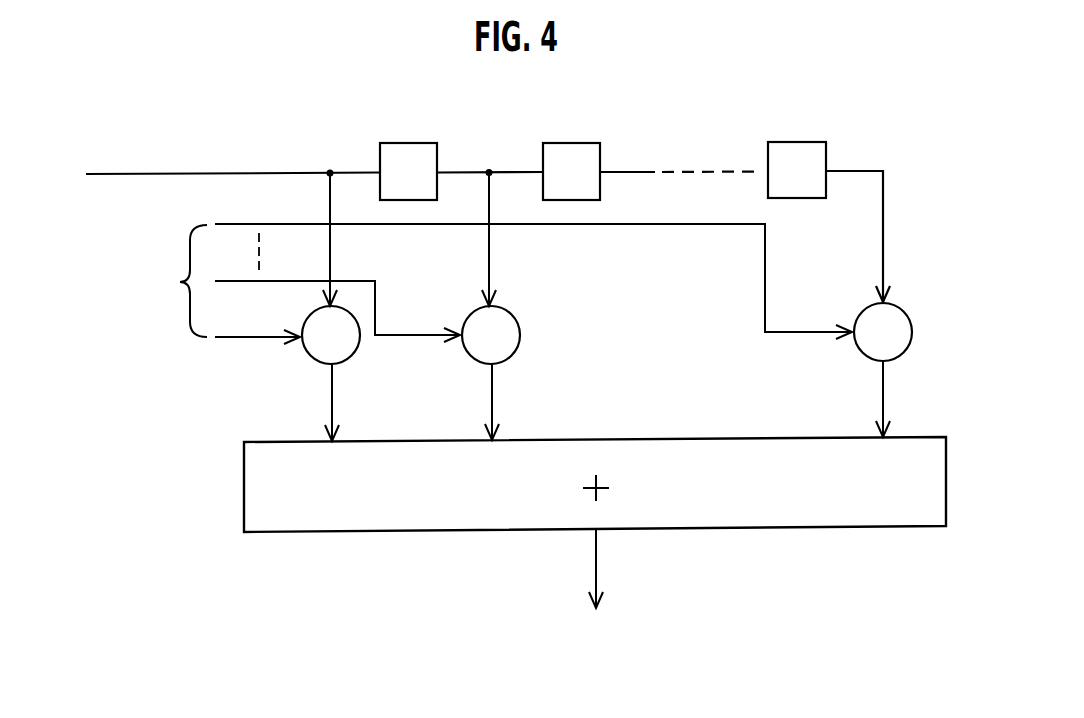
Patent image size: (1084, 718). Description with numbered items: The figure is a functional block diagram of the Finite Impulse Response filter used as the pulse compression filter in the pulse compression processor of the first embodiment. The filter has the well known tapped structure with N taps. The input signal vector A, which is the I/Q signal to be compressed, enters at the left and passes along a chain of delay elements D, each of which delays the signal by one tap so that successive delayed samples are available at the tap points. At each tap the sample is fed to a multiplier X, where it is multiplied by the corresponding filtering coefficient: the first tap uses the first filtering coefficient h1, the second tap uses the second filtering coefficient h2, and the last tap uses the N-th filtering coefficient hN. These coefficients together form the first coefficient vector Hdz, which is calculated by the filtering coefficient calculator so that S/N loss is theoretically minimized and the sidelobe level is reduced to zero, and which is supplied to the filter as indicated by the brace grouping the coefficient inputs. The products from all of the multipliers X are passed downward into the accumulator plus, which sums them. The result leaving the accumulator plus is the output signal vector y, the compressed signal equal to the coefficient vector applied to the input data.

The input signal vector A is at (217, 176).
The delay element D is at (635, 222).
The multiplier X is at (607, 333).
The first coefficient vector Hdz is at (190, 281).
The first filtering coefficient h1 is at (257, 324).
The second filtering coefficient h2 is at (337, 311).
The N-th filtering coefficient hN is at (533, 281).
The accumulator plus is at (595, 484).
The output signal vector y is at (595, 584).